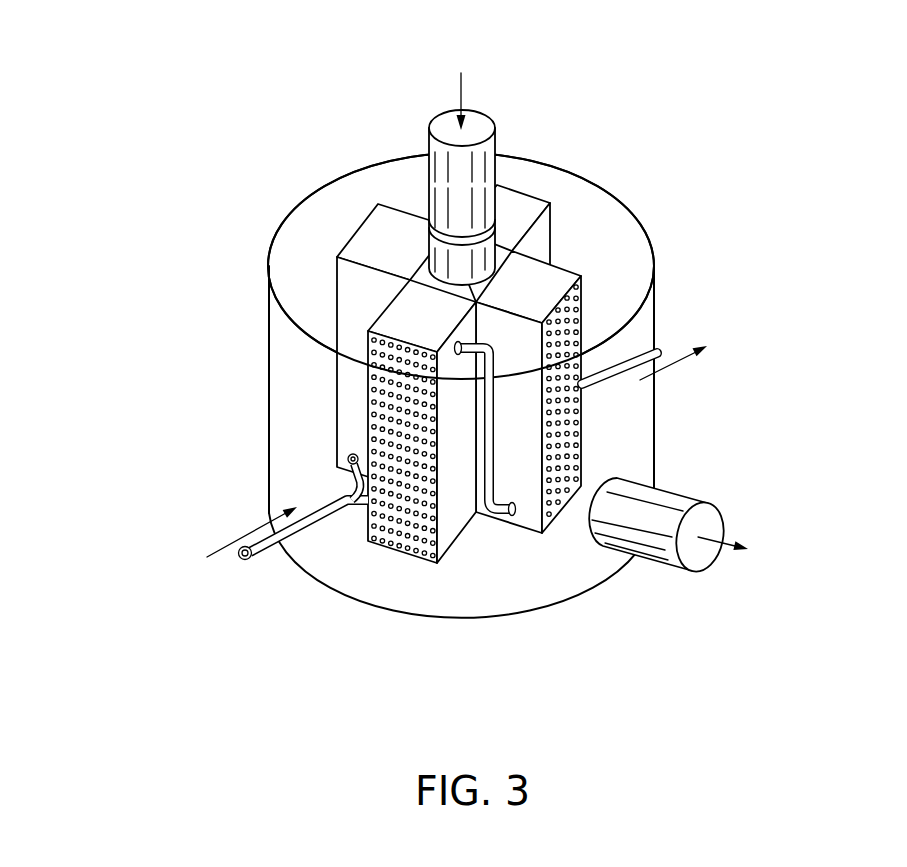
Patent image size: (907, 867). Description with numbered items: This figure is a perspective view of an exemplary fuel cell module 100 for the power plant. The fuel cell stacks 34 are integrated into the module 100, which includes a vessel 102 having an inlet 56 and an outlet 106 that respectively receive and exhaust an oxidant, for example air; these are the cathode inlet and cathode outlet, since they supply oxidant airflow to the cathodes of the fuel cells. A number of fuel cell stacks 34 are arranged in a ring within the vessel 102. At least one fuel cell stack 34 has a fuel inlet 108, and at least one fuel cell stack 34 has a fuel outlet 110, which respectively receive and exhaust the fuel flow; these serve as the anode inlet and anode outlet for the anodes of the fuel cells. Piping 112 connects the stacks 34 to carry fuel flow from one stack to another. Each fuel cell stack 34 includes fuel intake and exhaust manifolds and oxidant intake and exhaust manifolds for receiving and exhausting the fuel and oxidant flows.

The module 100 is at (459, 356).
The vessel 102 is at (598, 172).
The fuel cell stack 34 is at (530, 207).
The inlet 56 is at (485, 164).
The outlet 106 is at (662, 547).
The fuel inlet 108 is at (348, 459).
The fuel outlet 110 is at (618, 377).
The piping 112 is at (478, 512).